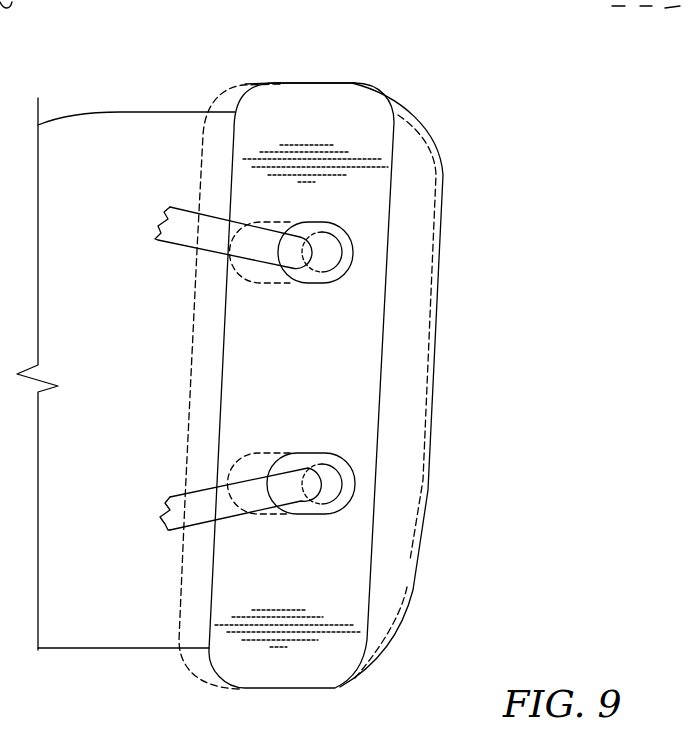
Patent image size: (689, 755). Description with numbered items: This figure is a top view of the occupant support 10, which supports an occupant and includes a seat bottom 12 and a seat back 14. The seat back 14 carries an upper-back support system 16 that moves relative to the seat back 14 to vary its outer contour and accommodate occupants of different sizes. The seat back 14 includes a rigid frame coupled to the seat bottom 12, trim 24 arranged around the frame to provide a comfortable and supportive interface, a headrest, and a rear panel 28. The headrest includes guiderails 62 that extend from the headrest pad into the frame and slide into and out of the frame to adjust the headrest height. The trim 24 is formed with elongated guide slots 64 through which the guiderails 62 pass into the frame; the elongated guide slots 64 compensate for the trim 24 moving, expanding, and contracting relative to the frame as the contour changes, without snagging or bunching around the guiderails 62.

The occupant support 10 is at (437, 93).
The seat bottom 12 is at (82, 150).
The seat back 14 is at (397, 474).
The upper-back support system 16 is at (337, 322).
The trim 24 is at (295, 125).
The rear panel 28 is at (428, 322).
The guiderails 62 is at (185, 248).
The elongated guide slots 64 is at (335, 237).